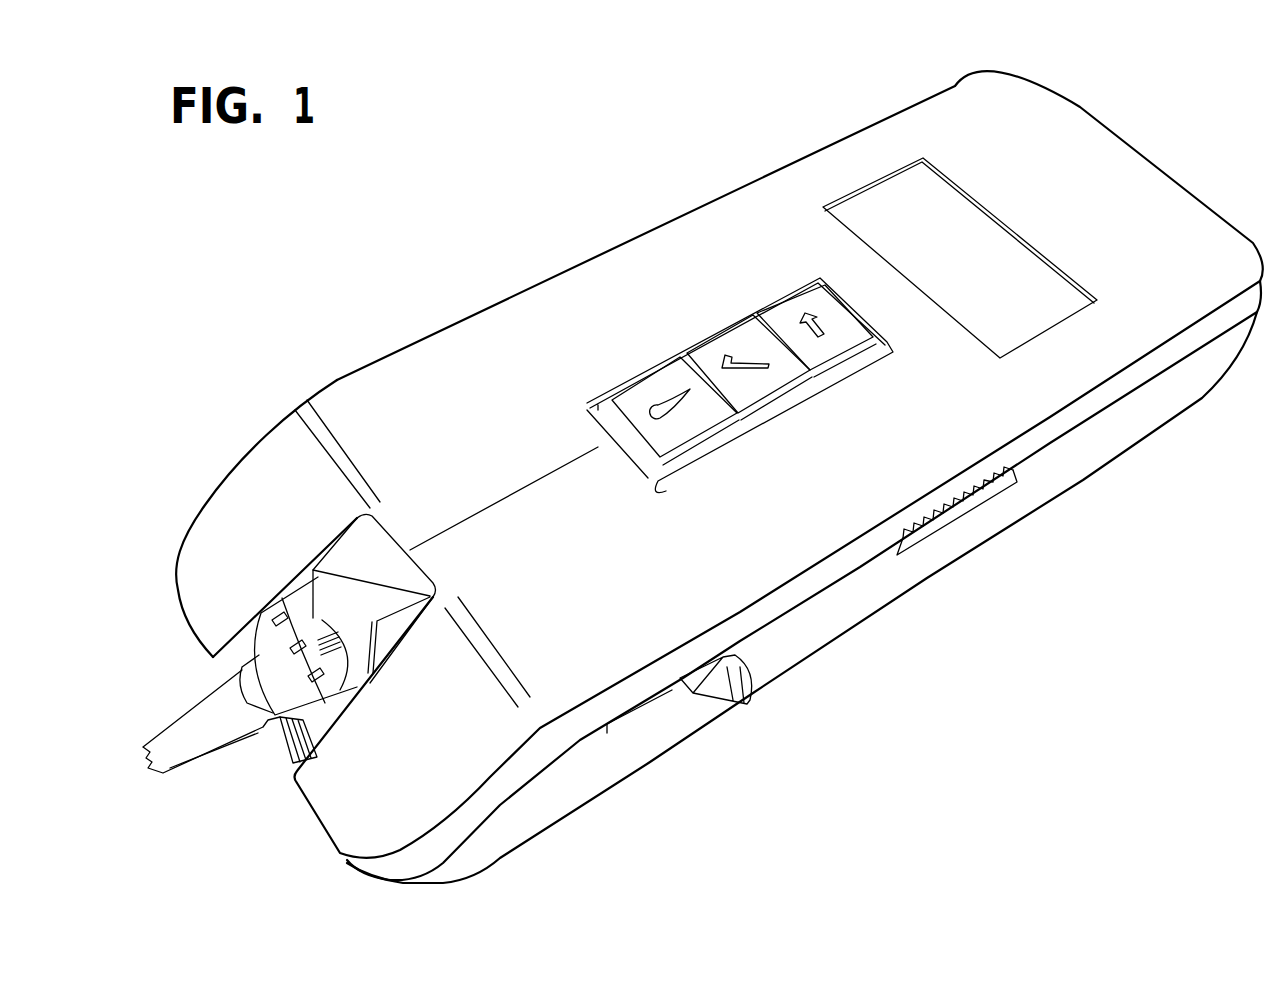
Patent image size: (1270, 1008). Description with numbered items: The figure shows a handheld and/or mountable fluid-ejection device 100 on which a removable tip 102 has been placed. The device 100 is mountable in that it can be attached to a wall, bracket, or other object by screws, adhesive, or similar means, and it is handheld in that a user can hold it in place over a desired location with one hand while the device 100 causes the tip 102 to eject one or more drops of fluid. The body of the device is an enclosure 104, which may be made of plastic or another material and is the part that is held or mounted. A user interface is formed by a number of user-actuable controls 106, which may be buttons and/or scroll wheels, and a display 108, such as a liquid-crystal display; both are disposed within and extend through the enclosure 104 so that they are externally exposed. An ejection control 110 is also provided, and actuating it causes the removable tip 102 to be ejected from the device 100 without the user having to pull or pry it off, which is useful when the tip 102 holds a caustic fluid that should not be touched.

The fluid-ejection device 100 is at (908, 661).
The removable tip 102 is at (185, 747).
The enclosure 104 is at (572, 336).
The user-actuable controls 106 is at (750, 432).
The display 108 is at (1040, 277).
The ejection control 110 is at (717, 693).